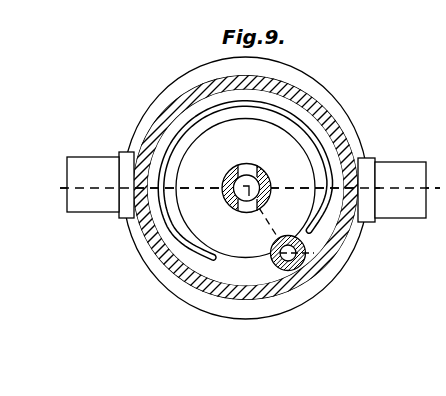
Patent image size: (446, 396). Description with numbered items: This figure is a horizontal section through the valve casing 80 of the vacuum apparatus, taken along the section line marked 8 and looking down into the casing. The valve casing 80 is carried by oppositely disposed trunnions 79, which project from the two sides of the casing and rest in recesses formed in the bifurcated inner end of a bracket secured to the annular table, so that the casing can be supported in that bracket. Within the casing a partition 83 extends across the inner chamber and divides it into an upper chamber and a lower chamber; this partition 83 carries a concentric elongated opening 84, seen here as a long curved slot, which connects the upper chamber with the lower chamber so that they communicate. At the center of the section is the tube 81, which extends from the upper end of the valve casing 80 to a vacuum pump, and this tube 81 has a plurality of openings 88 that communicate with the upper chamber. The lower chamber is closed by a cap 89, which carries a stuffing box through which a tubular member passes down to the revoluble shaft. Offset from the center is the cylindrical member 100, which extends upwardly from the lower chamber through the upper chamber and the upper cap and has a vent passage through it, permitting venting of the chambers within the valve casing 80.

The section line 8 is at (246, 190).
The trunnions 79 is at (88, 162).
The valve casing 80 is at (330, 101).
The tube 81 is at (262, 176).
The partition 83 is at (225, 280).
The concentric elongated opening 84 is at (198, 123).
The openings 88 is at (247, 165).
The cap 89 is at (348, 258).
The cylindrical member 100 is at (287, 272).